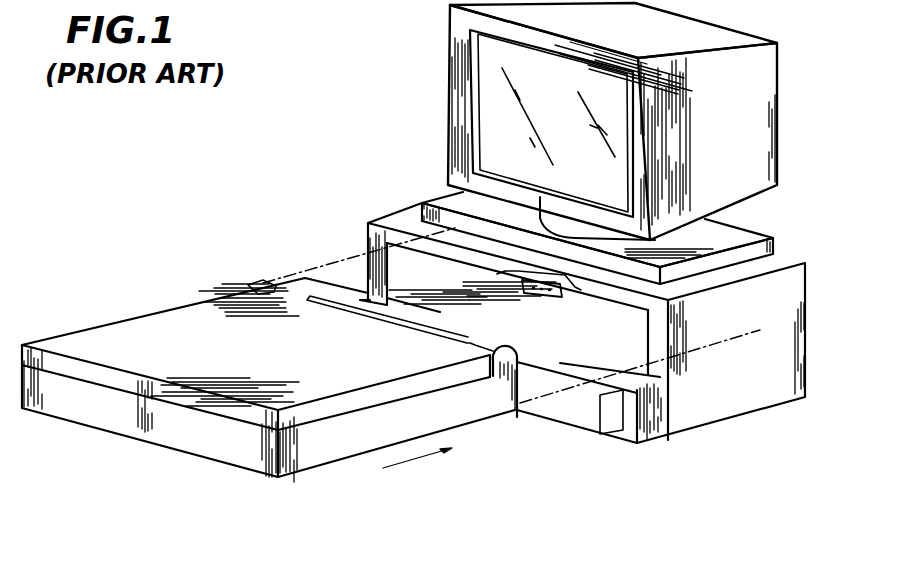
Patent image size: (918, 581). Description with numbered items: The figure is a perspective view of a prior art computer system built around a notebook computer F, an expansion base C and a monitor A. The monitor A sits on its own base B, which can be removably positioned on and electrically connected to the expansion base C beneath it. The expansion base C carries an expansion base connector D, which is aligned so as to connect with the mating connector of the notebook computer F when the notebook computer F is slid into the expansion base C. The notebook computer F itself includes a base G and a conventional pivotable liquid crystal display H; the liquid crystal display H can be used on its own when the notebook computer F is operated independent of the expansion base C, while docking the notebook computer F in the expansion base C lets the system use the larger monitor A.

The monitor A is at (780, 115).
The base B is at (750, 235).
The expansion base C is at (797, 325).
The expansion base connector D is at (538, 298).
The notebook computer F is at (323, 480).
The base G is at (482, 410).
The liquid crystal display H is at (163, 315).